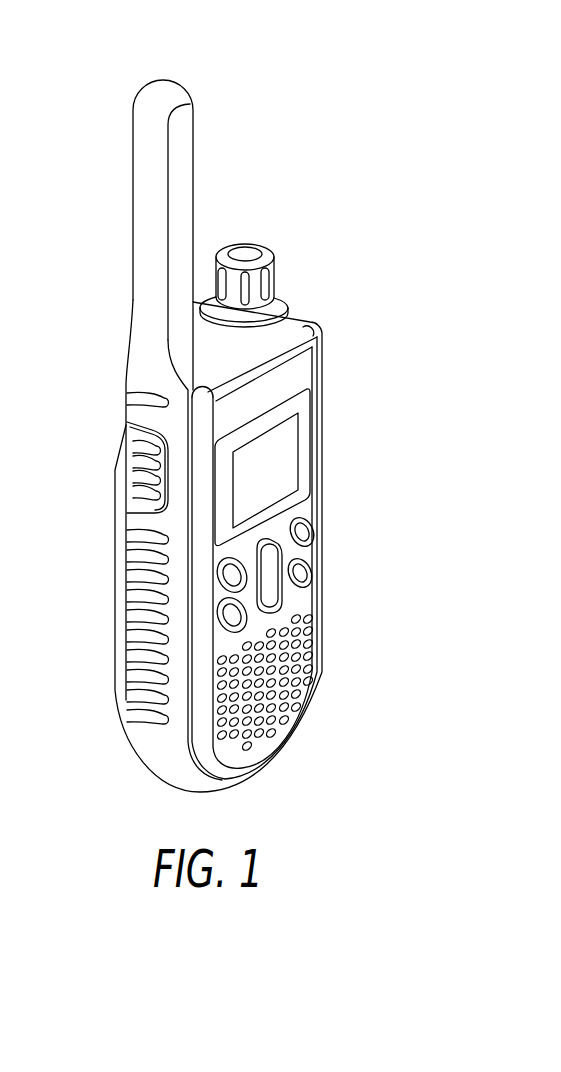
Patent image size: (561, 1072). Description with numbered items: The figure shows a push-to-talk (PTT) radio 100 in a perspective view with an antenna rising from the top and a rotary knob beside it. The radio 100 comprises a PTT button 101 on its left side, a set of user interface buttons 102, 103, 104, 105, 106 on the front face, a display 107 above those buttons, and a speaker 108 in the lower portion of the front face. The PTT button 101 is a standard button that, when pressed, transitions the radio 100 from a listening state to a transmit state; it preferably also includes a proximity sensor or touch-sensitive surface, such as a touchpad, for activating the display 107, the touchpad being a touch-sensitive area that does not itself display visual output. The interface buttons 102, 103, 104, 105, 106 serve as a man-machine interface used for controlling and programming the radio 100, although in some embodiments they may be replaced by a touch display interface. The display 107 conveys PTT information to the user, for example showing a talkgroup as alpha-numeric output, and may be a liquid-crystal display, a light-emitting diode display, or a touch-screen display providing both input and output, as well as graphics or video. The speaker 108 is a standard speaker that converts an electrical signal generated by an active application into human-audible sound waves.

The push-to-talk radio 100 is at (372, 56).
The PTT button 101 is at (138, 477).
The user interface button 102 is at (216, 574).
The user interface button 103 is at (216, 613).
The user interface button 104 is at (306, 574).
The user interface button 105 is at (270, 554).
The user interface button 106 is at (307, 533).
The display 107 is at (287, 457).
The speaker 108 is at (312, 664).